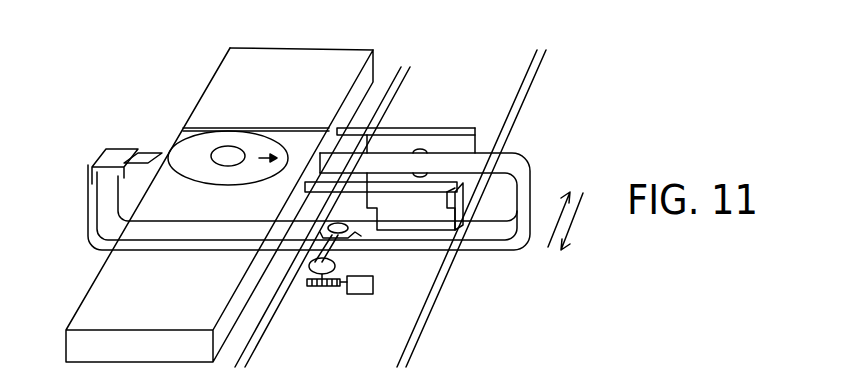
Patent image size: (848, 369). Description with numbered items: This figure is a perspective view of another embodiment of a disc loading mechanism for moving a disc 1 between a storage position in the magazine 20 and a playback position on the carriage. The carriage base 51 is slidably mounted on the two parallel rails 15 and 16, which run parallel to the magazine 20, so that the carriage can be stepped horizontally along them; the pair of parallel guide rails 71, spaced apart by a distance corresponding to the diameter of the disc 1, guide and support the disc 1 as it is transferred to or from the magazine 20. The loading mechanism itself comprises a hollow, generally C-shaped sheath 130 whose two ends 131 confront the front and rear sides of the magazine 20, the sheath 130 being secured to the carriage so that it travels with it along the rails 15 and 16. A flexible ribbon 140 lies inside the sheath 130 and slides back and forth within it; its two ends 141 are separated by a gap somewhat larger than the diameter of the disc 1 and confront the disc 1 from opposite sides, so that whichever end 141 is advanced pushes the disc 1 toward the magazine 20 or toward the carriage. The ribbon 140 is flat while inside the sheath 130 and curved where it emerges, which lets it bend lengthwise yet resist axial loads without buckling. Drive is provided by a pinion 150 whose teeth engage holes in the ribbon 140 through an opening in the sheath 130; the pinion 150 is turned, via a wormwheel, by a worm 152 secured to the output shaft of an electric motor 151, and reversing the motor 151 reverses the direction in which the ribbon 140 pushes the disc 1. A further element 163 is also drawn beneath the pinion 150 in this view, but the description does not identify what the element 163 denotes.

The disc 1 is at (196, 147).
The rail 15 is at (542, 58).
The rail 16 is at (398, 73).
The magazine 20 is at (277, 47).
The base 51 is at (445, 135).
The guide rails 71 is at (405, 128).
The hollow sheath 130 is at (150, 252).
The ends of sheath 131 is at (108, 155).
The flexible ribbon 140 is at (145, 157).
The ends of ribbon 141 is at (158, 152).
The pinion 150 is at (340, 237).
The electric motor 151 is at (373, 284).
The worm 152 is at (337, 287).
The cam 163 is at (310, 268).